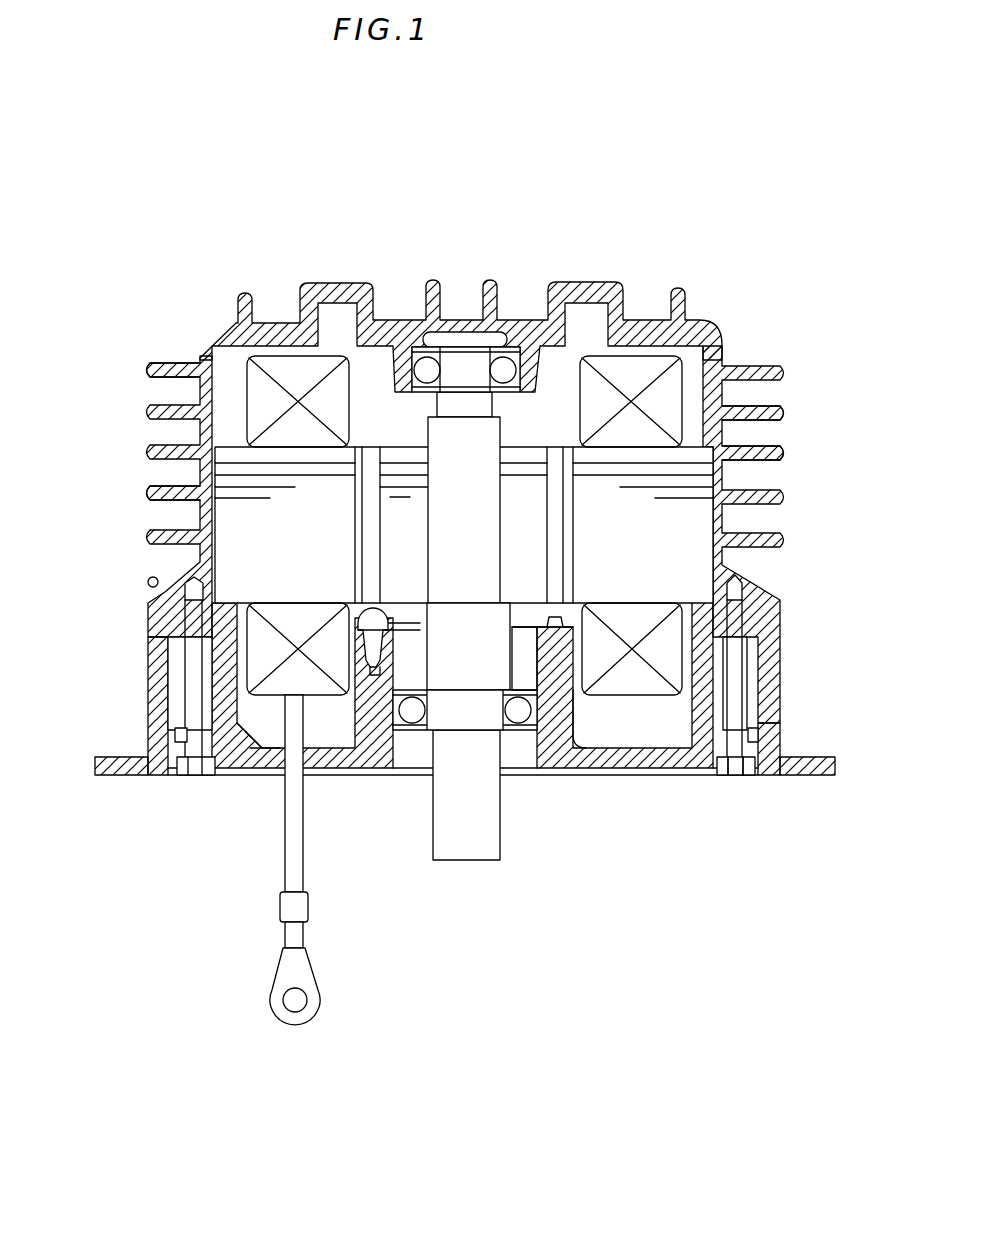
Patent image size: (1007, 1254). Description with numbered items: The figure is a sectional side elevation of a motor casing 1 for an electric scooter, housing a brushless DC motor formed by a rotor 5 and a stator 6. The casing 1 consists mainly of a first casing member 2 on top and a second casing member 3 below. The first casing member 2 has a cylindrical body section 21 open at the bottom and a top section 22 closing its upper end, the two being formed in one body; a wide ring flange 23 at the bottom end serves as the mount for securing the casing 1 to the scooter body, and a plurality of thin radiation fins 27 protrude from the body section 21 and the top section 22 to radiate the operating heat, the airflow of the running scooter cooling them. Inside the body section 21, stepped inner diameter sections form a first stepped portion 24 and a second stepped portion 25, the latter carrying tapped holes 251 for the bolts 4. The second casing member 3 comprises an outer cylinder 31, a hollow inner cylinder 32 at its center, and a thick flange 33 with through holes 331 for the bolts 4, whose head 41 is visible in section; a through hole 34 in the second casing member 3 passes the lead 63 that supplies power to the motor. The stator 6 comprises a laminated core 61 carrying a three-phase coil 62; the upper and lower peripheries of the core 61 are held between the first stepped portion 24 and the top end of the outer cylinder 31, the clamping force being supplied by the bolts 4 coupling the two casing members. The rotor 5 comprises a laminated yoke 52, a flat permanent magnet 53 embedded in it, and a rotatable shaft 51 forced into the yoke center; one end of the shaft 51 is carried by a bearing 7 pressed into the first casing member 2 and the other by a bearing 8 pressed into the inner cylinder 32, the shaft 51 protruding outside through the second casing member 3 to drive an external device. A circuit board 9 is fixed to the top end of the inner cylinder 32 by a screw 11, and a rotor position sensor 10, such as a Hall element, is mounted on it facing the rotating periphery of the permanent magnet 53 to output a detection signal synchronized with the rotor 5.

The motor casing 1 is at (700, 253).
The first casing member 2 is at (612, 318).
The second casing member 3 is at (620, 772).
The bolt 4 is at (195, 660).
The rotor 5 is at (414, 548).
The stator 6 is at (572, 388).
The bearing 7 is at (420, 345).
The bearing 8 is at (412, 712).
The circuit board 9 is at (510, 632).
The rotor position sensor 10 is at (555, 735).
The screw 11 is at (370, 692).
The cylindrical body section 21 is at (722, 538).
The top section 22 is at (462, 335).
The flange 23 is at (117, 767).
The first stepped portion 24 is at (237, 498).
The second stepped portion 25 is at (160, 612).
The radiation fin 27 is at (245, 292).
The outer cylinder 31 is at (705, 680).
The inner cylinder 32 is at (575, 712).
The flange 33 is at (177, 740).
The through hole 34 is at (265, 772).
The head 41 is at (733, 770).
The rotatable shaft 51 is at (468, 843).
The yoke 52 is at (403, 478).
The permanent magnet 53 is at (377, 487).
The core 61 is at (237, 540).
The coil 62 is at (255, 378).
The lead 63 is at (293, 855).
The tapped hole 251 is at (150, 578).
The through hole 331 is at (165, 777).